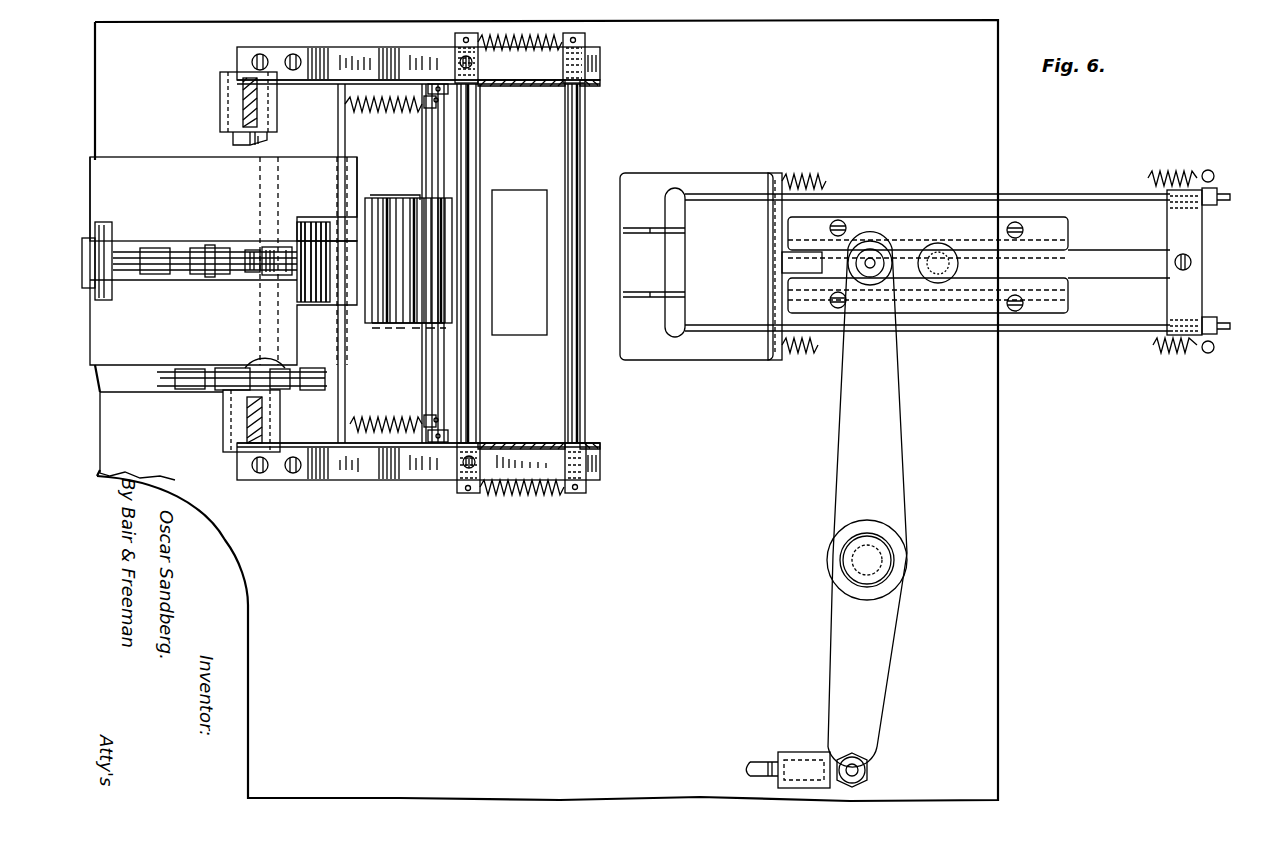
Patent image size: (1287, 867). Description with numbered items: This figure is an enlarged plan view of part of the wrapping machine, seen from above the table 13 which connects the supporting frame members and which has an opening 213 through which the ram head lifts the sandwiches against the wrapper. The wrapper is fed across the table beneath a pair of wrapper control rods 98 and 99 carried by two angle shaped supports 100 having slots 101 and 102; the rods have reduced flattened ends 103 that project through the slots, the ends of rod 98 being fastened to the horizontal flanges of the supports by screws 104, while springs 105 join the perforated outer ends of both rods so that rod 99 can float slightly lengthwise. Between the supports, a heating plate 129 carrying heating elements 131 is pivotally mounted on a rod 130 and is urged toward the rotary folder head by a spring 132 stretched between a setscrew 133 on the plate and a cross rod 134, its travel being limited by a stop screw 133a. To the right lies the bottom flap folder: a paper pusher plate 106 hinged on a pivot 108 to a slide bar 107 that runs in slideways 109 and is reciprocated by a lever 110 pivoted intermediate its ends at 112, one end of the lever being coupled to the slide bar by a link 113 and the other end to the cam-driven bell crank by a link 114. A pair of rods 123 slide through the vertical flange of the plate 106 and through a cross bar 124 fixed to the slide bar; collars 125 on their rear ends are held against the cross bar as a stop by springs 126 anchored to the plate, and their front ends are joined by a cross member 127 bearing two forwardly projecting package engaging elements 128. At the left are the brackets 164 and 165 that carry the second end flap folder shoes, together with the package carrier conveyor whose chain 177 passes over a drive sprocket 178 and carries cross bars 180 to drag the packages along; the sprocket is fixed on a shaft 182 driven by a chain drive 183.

The table 13 is at (546, 410).
The wrapper control rod 98 is at (480, 388).
The wrapper control rod 99 is at (568, 395).
The angle shaped support 100 is at (594, 65).
The slot 101 is at (480, 443).
The slot 102 is at (600, 86).
The reduced flattened end 103 is at (585, 48).
The screw 104 is at (473, 62).
The spring 105 is at (525, 48).
The paper pusher plate 106 is at (720, 362).
The slide bar 107 is at (1119, 264).
The pivot 108 is at (768, 270).
The slideway 109 is at (928, 265).
The lever 110 is at (914, 500).
The pivot 112 is at (880, 553).
The link 113 is at (905, 255).
The link 114 is at (752, 778).
The rod 123 is at (720, 196).
The cross bar 124 is at (1184, 262).
The collar 125 is at (1212, 208).
The spring 126 is at (808, 174).
The cross member 127 is at (678, 262).
The package engaging element 128 is at (650, 240).
The heating plate 129 is at (398, 212).
The rod 130 is at (432, 153).
The heating element 131 is at (400, 328).
The spring 132 is at (356, 112).
The setscrew 133 is at (426, 96).
The stop screw 133a is at (424, 133).
The cross rod 134 is at (338, 134).
The bracket 164 is at (247, 425).
The bracket 165 is at (243, 100).
The conveyor chain 177 is at (185, 268).
The drive sprocket 178 is at (265, 250).
The cross bar 180 is at (300, 215).
The shaft 182 is at (270, 155).
The chain drive 183 is at (195, 392).
The opening 213 is at (545, 210).